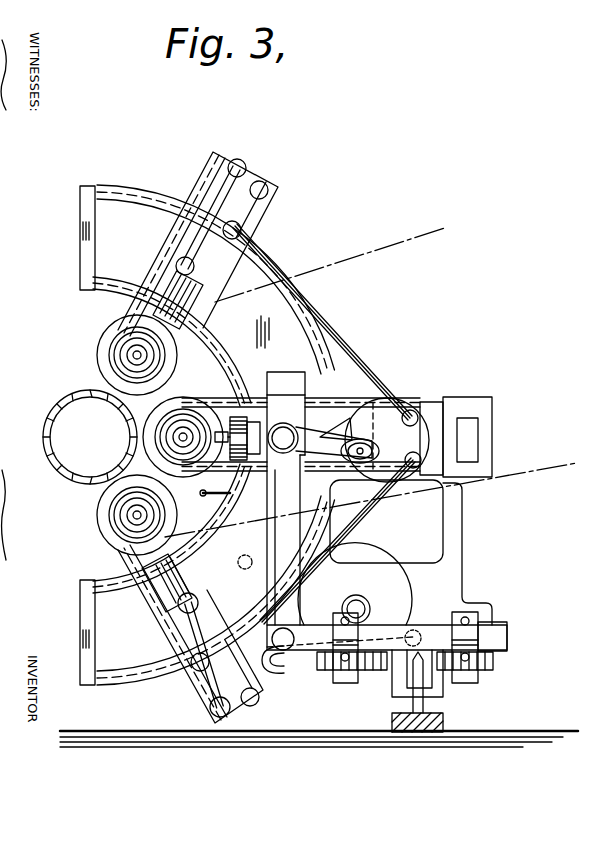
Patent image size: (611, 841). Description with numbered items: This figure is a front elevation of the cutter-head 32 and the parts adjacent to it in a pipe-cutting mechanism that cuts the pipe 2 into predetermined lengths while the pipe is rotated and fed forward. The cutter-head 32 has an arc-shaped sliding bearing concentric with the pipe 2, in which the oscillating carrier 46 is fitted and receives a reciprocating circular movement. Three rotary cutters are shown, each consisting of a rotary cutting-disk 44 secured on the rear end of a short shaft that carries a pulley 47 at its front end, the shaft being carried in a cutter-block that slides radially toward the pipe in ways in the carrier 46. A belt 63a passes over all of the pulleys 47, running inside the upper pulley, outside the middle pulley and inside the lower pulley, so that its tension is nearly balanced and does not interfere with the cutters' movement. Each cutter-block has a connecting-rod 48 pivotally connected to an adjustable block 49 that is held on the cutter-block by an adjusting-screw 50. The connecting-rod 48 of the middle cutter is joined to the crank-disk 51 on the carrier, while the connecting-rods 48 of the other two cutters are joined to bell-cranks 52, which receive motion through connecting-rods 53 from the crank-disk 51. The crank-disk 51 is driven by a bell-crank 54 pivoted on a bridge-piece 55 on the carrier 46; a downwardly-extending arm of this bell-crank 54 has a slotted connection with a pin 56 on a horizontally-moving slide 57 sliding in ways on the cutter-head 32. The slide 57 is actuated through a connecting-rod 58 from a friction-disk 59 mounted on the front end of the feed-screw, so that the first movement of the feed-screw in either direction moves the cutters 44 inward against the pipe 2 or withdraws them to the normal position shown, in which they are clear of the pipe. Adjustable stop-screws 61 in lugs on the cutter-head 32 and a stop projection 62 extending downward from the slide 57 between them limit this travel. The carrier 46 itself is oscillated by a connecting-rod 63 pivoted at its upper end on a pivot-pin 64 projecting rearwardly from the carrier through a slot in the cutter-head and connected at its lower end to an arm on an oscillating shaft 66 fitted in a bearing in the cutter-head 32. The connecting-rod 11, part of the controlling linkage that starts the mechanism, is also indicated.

The pipe 2 is at (90, 437).
The connecting-rod 11 is at (204, 492).
The cutter-head 32 is at (110, 188).
The rotary cutting-disk 44 is at (97, 358).
The oscillating carrier 46 is at (125, 698).
The pulley 47 is at (117, 368).
The connecting-rod 48 is at (230, 177).
The adjustable block 49 is at (182, 318).
The adjusting-screw 50 is at (160, 345).
The crank-disk 51 is at (406, 424).
The bell-crank 52 is at (255, 176).
The connecting-rod 53 is at (320, 313).
The bell-crank 54 is at (280, 535).
The bridge-piece 55 is at (281, 355).
The pin 56 is at (297, 683).
The slide 57 is at (497, 628).
The connecting-rod 58 is at (392, 640).
The friction-disk 59 is at (383, 580).
The stop-screw 61 is at (383, 670).
The stop projection 62 is at (433, 660).
The connecting-rod 63 is at (371, 500).
The belt 63a is at (373, 250).
The pivot-pin 64 is at (347, 381).
The oscillating shaft 66 is at (283, 667).